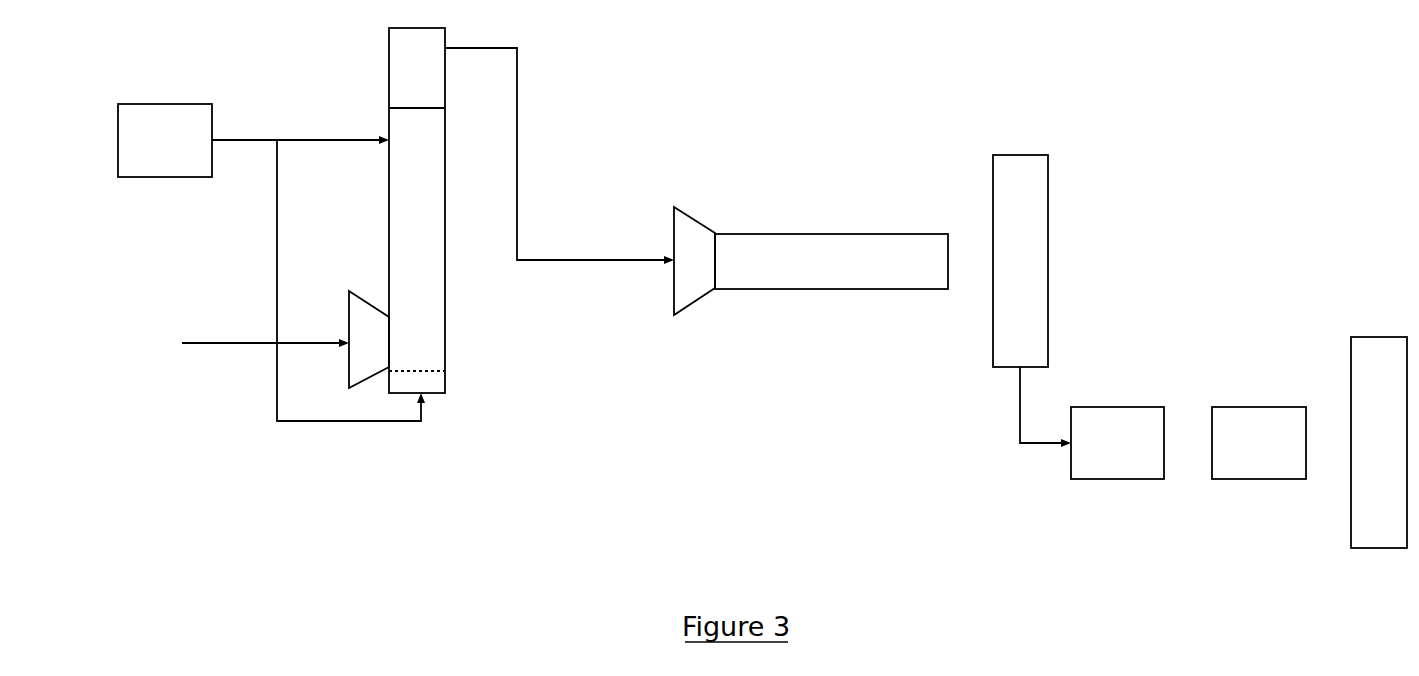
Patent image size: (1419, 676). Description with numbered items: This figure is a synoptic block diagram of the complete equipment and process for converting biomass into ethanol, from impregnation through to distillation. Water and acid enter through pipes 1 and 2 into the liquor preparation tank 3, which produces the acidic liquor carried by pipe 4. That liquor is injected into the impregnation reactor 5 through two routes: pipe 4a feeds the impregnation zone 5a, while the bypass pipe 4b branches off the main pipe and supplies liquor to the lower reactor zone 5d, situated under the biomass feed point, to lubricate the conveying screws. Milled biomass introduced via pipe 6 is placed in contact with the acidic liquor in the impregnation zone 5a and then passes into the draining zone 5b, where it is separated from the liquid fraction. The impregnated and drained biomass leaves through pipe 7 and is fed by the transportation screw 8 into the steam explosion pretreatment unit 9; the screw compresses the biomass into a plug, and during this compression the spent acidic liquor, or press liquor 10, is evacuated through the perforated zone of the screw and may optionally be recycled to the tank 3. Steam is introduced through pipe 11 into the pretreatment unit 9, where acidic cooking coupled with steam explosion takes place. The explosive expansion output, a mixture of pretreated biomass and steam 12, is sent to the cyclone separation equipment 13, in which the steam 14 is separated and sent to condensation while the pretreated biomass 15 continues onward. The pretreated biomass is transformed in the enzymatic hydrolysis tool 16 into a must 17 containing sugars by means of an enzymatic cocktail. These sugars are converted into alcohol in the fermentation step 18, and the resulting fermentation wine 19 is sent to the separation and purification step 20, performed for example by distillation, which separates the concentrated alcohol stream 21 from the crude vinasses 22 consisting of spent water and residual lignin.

The water entry pipe 1 is at (48, 140).
The acid entry pipe 2 is at (165, 60).
The liquor preparation tank 3 is at (165, 140).
The acidic liquor pipe 4 is at (244, 116).
The acidic liquor pipe to impregnation zone 4a is at (333, 123).
The acidic liquor bypass pipe 4b is at (351, 280).
The impregnation reactor 5 is at (429, 210).
The impregnation zone 5a is at (417, 250).
The draining zone 5b is at (417, 87).
The lower reactor zone 5d is at (434, 382).
The milled biomass pipe 6 is at (265, 323).
The impregnated and drained biomass pipe 7 is at (559, 156).
The transportation screw 8 is at (694, 261).
The steam explosion pretreatment unit 9 is at (831, 261).
The press liquor 10 is at (695, 315).
The steam pipe 11 is at (755, 226).
The pretreated biomass and steam mixture 12 is at (948, 262).
The cyclone separation equipment 13 is at (1020, 261).
The steam to condensation 14 is at (1020, 155).
The pretreated biomass 15 is at (1024, 407).
The enzymatic hydrolysis tool 16 is at (1117, 443).
The must 17 is at (1164, 443).
The fermentation step 18 is at (1259, 443).
The fermentation wine 19 is at (1306, 443).
The separation and purification step 20 is at (1379, 442).
The concentrated alcohol stream 21 is at (1379, 291).
The crude vinasses 22 is at (1379, 548).